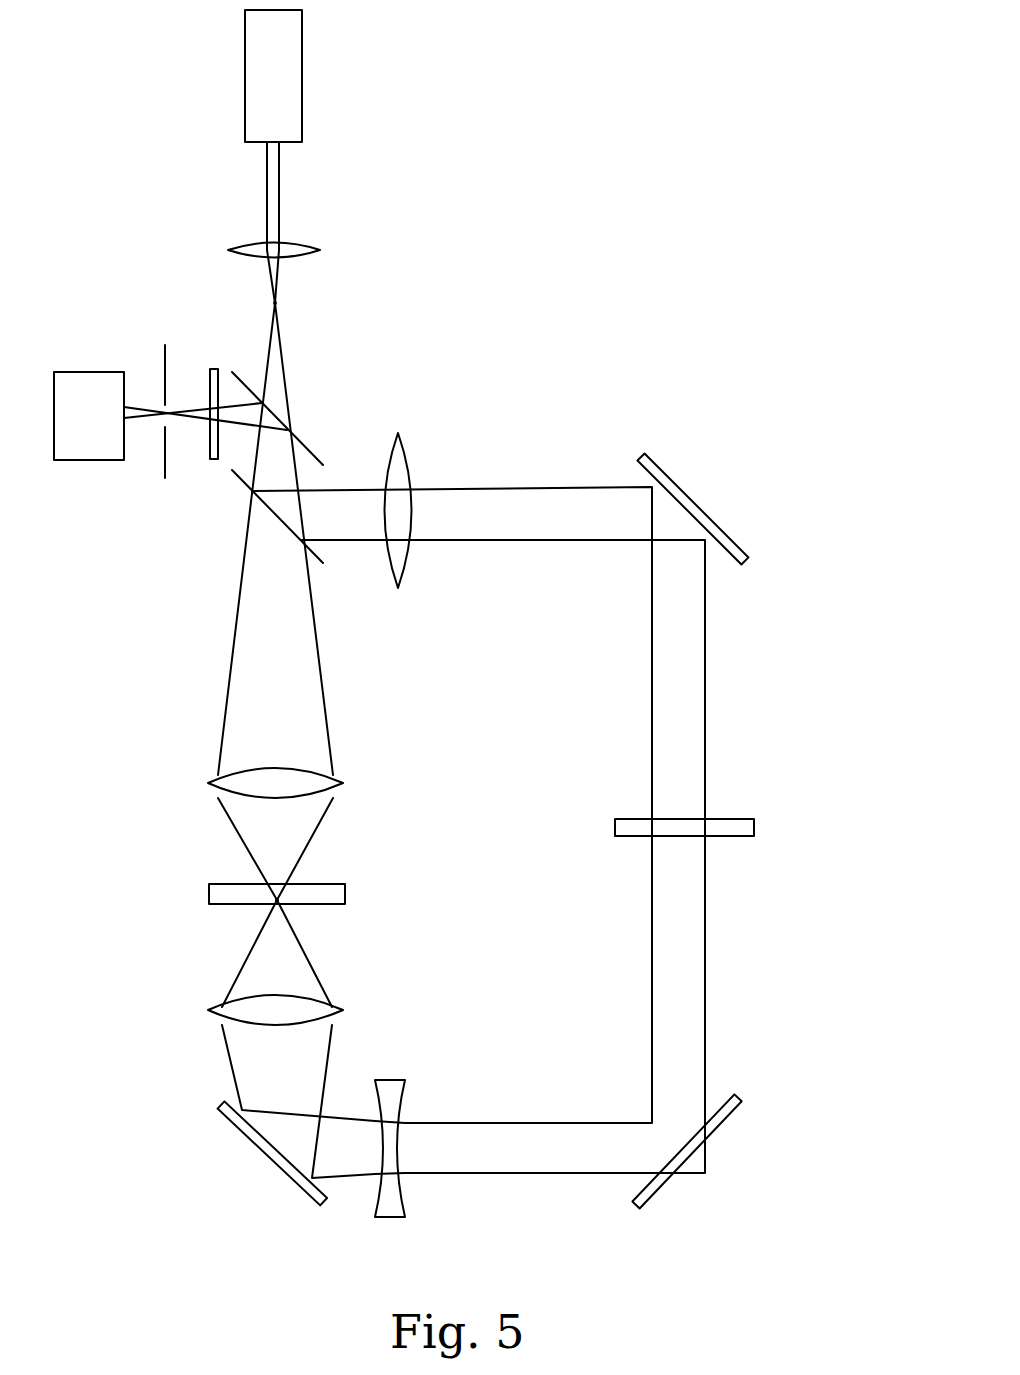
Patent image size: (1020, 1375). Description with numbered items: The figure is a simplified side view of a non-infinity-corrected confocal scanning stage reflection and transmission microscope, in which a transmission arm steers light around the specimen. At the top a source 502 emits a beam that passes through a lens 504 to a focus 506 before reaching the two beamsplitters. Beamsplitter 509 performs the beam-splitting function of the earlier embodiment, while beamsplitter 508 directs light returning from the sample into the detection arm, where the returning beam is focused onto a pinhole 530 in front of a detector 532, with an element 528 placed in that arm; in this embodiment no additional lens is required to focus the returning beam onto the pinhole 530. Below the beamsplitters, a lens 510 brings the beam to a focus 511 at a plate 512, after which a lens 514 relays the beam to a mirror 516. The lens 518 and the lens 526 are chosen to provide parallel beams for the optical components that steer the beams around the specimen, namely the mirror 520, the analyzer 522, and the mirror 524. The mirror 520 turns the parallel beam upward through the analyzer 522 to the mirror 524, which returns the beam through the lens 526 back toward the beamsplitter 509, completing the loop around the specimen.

The laser source 502 is at (302, 38).
The focusing lens 504 is at (320, 250).
The focal point / pinhole 506 is at (285, 303).
The beamsplitter 508 is at (310, 446).
The beamsplitter 509 is at (240, 480).
The lens 510 is at (343, 783).
The focal point 511 is at (268, 893).
The plate / filter 512 is at (345, 894).
The lens 514 is at (343, 1010).
The mirror 516 is at (280, 1175).
The lens 518 is at (392, 1218).
The mirror 520 is at (700, 1150).
The analyzer 522 is at (754, 826).
The mirror 524 is at (672, 478).
The lens 526 is at (398, 590).
The plate / filter 528 is at (268, 303).
The pinhole 530 is at (165, 345).
The detector 532 is at (105, 372).